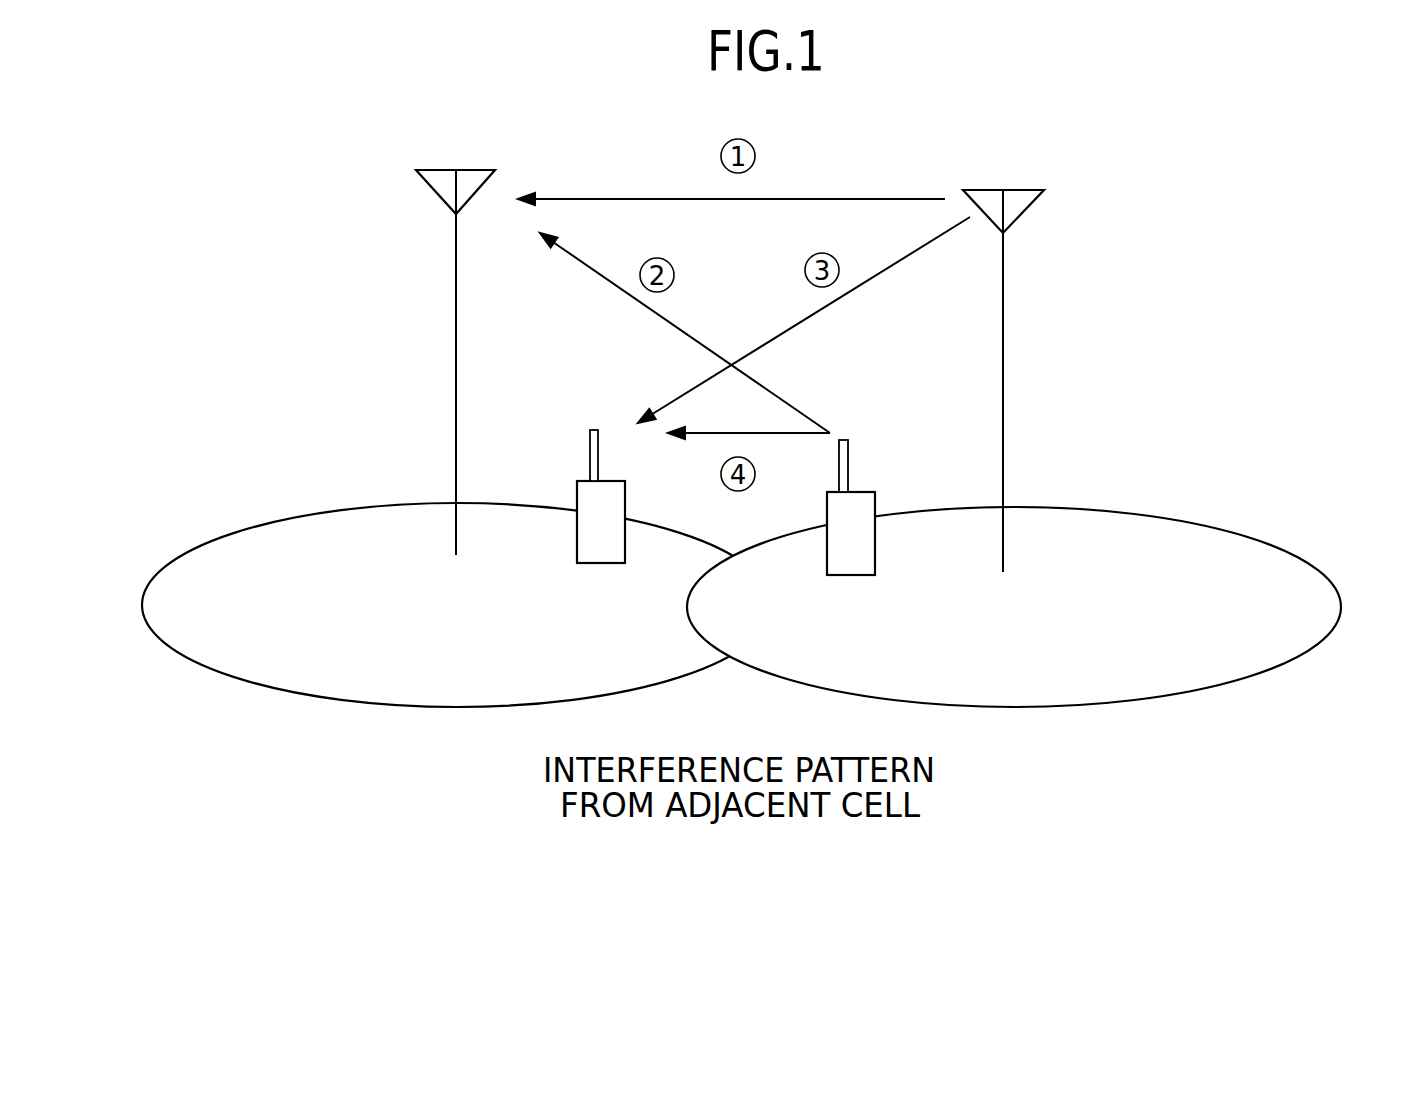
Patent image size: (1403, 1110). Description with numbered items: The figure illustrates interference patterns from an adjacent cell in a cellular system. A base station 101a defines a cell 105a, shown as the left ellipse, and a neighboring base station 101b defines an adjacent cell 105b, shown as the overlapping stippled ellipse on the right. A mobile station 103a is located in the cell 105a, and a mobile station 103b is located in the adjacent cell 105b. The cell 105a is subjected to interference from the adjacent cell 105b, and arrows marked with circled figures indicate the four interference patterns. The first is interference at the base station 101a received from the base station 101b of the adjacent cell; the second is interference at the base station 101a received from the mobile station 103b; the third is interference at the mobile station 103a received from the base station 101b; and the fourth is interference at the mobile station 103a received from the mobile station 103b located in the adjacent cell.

The base station 101a is at (429, 362).
The base station 101b is at (1030, 381).
The mobile station 103a is at (577, 490).
The mobile station 103b is at (877, 503).
The cell 105a is at (335, 693).
The cell 105b is at (1133, 697).